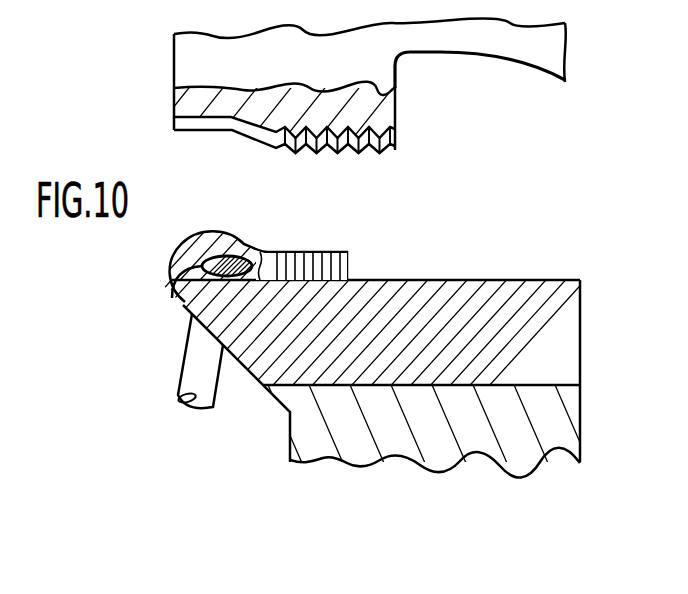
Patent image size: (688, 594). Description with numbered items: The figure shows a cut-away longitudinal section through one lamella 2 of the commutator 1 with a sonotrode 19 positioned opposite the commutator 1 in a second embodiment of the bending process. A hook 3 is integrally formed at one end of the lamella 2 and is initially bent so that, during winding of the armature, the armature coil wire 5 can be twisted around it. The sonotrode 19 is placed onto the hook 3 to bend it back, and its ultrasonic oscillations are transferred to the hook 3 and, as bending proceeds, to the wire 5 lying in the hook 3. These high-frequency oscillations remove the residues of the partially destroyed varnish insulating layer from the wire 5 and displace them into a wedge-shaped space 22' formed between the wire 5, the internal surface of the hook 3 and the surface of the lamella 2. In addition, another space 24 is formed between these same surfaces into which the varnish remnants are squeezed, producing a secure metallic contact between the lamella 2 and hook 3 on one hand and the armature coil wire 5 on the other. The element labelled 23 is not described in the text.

The commutator 1 is at (487, 275).
The lamella 2 is at (405, 300).
The hook 3 is at (203, 247).
The armature coil wire 5 is at (230, 256).
The sonotrode 19 is at (476, 35).
The wedge-shaped space 22' is at (301, 233).
The corrugated sheet 23 is at (393, 118).
The space 24 is at (173, 297).